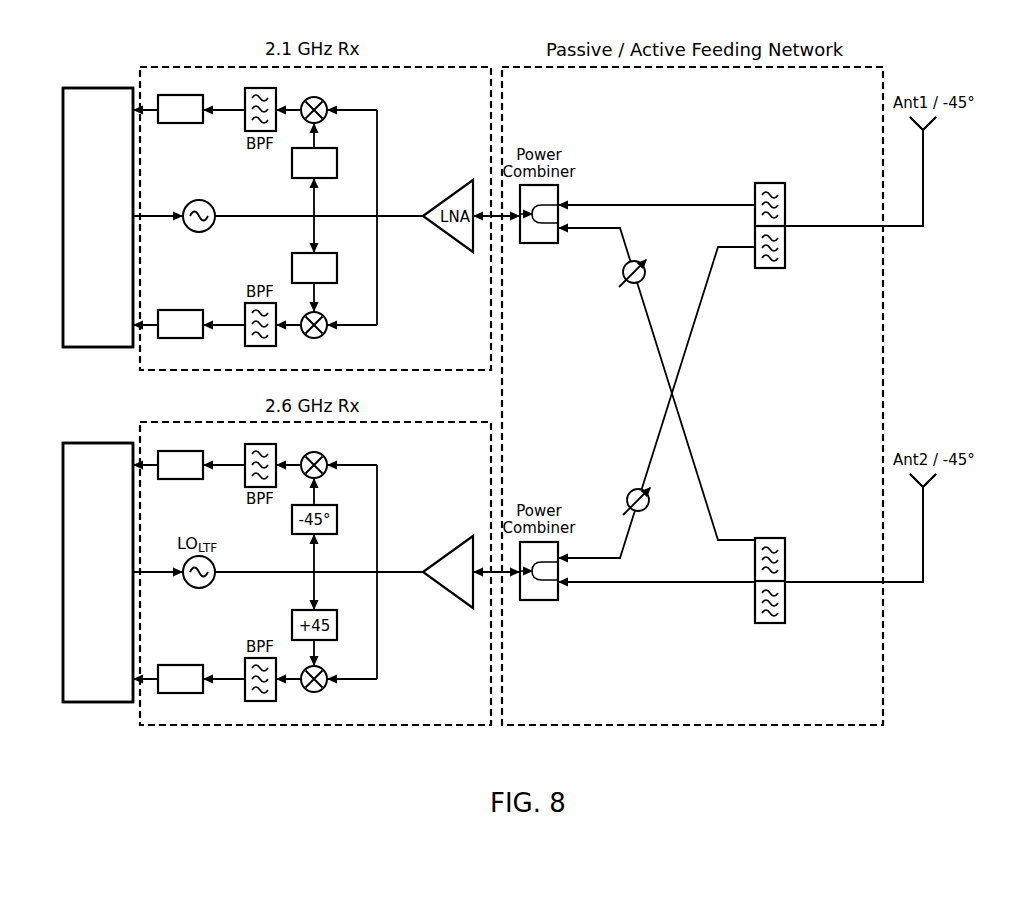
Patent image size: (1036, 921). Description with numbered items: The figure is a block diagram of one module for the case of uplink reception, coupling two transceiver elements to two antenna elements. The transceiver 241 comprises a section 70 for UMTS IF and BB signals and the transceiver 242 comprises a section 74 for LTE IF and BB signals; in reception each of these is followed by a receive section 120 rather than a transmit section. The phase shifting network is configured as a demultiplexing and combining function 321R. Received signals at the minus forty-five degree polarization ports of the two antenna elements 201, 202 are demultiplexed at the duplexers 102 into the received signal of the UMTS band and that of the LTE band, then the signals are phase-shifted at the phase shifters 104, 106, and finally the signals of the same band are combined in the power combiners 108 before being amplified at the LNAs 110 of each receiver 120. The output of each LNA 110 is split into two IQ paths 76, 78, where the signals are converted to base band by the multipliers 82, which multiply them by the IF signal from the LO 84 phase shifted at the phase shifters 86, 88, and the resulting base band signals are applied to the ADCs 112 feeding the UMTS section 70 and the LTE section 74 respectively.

The transceiver 241 is at (68, 88).
The section for UMTS IF and BB signals 70 is at (108, 88).
The ADC 112 is at (180, 95).
The receive section 120 is at (216, 67).
The I path 76 is at (377, 119).
The phase shifter 86 is at (337, 163).
The LO 84 is at (199, 232).
The phase shifter 88 is at (337, 268).
The Q path 78 is at (377, 325).
The demultiplexing and combining function 321R is at (628, 67).
The antenna element 201 is at (923, 185).
The phase shifter 106 is at (645, 284).
The demultiplexer 102 is at (770, 268).
The phase shifter 104 is at (645, 512).
The power combiner 108 is at (540, 600).
The LNA 110 is at (447, 594).
The antenna element 202 is at (923, 540).
The transceiver 242 is at (73, 702).
The section for LTE IF and BB signals 74 is at (108, 702).
The multiplier 82 is at (310, 692).